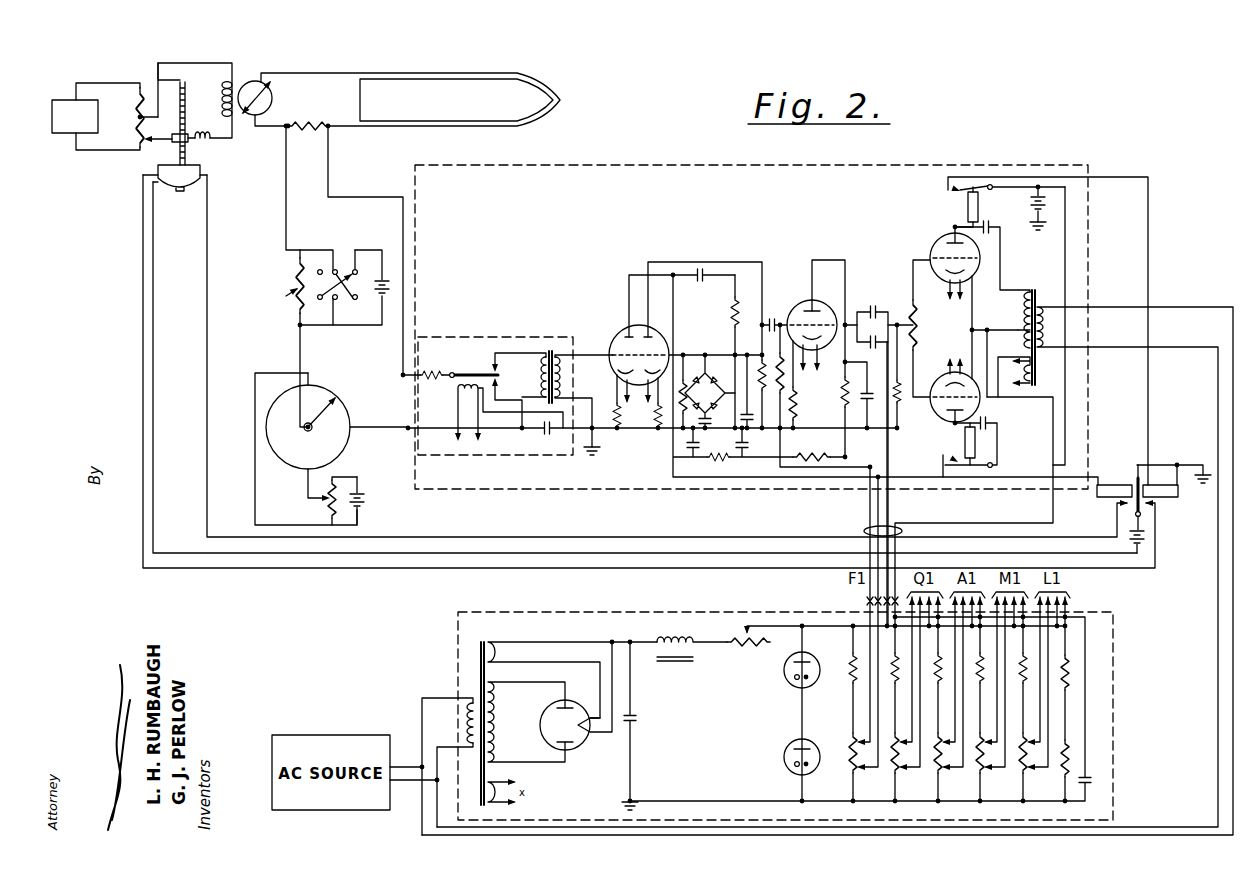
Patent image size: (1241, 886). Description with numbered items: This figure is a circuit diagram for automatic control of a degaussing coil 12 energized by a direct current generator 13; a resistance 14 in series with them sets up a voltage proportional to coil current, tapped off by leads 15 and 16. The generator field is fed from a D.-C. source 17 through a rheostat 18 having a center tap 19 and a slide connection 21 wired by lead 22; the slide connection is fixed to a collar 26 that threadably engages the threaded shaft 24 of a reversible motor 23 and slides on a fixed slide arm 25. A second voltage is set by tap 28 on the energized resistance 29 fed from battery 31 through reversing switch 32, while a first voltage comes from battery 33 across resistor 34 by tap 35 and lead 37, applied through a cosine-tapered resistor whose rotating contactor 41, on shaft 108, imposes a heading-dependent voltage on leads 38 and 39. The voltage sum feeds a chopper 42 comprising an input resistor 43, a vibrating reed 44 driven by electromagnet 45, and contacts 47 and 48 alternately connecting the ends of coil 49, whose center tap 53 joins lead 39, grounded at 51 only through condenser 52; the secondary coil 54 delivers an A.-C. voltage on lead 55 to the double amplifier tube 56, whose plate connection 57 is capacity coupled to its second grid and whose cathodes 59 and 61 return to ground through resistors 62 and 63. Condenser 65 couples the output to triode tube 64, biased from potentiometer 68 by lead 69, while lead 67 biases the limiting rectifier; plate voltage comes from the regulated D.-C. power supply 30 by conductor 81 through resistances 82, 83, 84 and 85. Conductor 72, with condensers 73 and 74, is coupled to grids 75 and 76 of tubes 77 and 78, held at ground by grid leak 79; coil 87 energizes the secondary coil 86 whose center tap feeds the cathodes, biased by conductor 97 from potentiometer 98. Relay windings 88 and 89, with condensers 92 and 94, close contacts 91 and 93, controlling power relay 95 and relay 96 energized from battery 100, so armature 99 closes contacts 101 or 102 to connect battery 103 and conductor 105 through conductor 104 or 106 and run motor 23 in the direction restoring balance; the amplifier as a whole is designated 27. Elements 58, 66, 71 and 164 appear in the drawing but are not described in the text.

The degaussing coil 12 is at (562, 104).
The direct current generator 13 is at (260, 78).
The resistance 14 is at (326, 122).
The lead 15 is at (333, 168).
The lead 16 is at (287, 178).
The D.-C. source 17 is at (96, 116).
The rheostat 18 is at (134, 117).
The center tap 19 is at (185, 63).
The slide connection 21 is at (158, 142).
The lead 22 is at (225, 138).
The reversible direct current motor 23 is at (200, 168).
The threaded shaft 24 is at (156, 70).
The fixed slide arm 25 is at (190, 100).
The collar 26 is at (188, 134).
The amplifier 27 is at (686, 163).
The tap 28 is at (280, 295).
The energized resistance 29 is at (296, 258).
The D.-C. power supply 30 is at (1118, 677).
The battery 31 is at (383, 262).
The reversing switch 32 is at (338, 305).
The battery 33 is at (359, 489).
The resistor 34 is at (337, 477).
The tap 35 is at (318, 500).
The lead 37 is at (255, 470).
The lead 38 is at (304, 350).
The lead 39 is at (388, 430).
The rotating contactor 41 is at (322, 395).
The chopper 42 is at (483, 337).
The input resistor 43 is at (428, 370).
The reed 44 is at (460, 372).
The electromagnet 45 is at (457, 384).
The contact 47 is at (513, 353).
The contact 48 is at (519, 404).
The coil 49 is at (549, 351).
The ground 51 is at (598, 445).
The condenser 52 is at (545, 435).
The center tap 53 is at (538, 370).
The secondary coil 54 is at (563, 370).
The lead 55 is at (598, 353).
The double amplifier tube 56 is at (626, 334).
The plate connection 57 is at (628, 296).
The plate lead 58 is at (650, 316).
The cathode 59 is at (619, 380).
The cathode 61 is at (639, 347).
The resistor 62 is at (614, 424).
The resistor 63 is at (655, 426).
The triode tube 64 is at (803, 304).
The condenser 65 is at (771, 320).
The rectifier bridge 66 is at (714, 383).
The lead 67 is at (878, 380).
The potentiometer 68 is at (822, 760).
The lead 69 is at (866, 530).
The plate conductor 71 is at (848, 287).
The conductor 72 is at (907, 322).
The condenser 73 is at (873, 308).
The condenser 74 is at (875, 346).
The grid 75 is at (931, 260).
The grid 76 is at (926, 408).
The tube 77 is at (948, 236).
The tube 78 is at (945, 414).
The grid leak 79 is at (895, 393).
The conductor 81 is at (889, 458).
The resistance 82 is at (842, 392).
The resistance 83 is at (808, 460).
The resistance 84 is at (758, 362).
The resistance 85 is at (691, 392).
The secondary coil 86 is at (1020, 334).
The coil 87 is at (1040, 307).
The relay winding 88 is at (966, 206).
The relay winding 89 is at (965, 442).
The contacts 91 is at (953, 188).
The condenser 92 is at (996, 232).
The contacts 93 is at (951, 458).
The condenser 94 is at (990, 426).
The power relay 95 is at (1180, 491).
The relay 96 is at (1113, 484).
The conductor 97 is at (1036, 524).
The potentiometer 98 is at (1072, 757).
The armature 99 is at (1138, 466).
The battery 100 is at (1046, 222).
The contact 101 is at (1155, 506).
The contact 102 is at (1112, 503).
The battery 103 is at (1146, 546).
The conductor 104 is at (1125, 570).
The conductor 105 is at (1062, 553).
The conductor 106 is at (1042, 537).
The shaft 108 is at (314, 432).
The pointer 164 is at (338, 394).